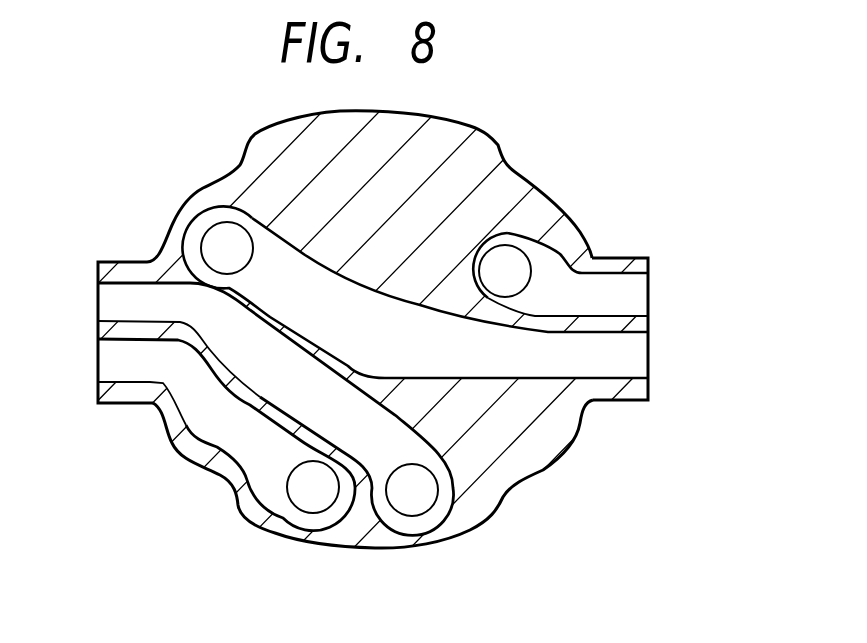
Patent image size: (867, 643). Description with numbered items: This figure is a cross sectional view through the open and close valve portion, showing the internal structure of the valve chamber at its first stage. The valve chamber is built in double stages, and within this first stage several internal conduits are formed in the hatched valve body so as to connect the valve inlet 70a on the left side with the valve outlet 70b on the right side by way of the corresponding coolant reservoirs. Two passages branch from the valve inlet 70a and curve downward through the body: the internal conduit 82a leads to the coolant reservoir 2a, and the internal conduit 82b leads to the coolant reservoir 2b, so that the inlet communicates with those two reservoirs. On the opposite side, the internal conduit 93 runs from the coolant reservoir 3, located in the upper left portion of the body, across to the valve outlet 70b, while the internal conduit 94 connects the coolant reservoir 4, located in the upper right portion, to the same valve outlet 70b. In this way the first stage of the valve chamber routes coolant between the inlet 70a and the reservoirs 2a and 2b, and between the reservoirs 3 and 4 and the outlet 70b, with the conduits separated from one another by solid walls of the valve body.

The valve inlet 70a is at (98, 297).
The valve outlet 70b is at (650, 295).
The internal conduit 93 is at (618, 355).
The internal conduit 94 is at (556, 264).
The internal conduit 82a is at (215, 420).
The internal conduit 82b is at (410, 442).
The coolant reservoir 3 is at (221, 241).
The coolant reservoir 4 is at (508, 262).
The coolant reservoir 2a is at (301, 491).
The coolant reservoir 2b is at (423, 496).